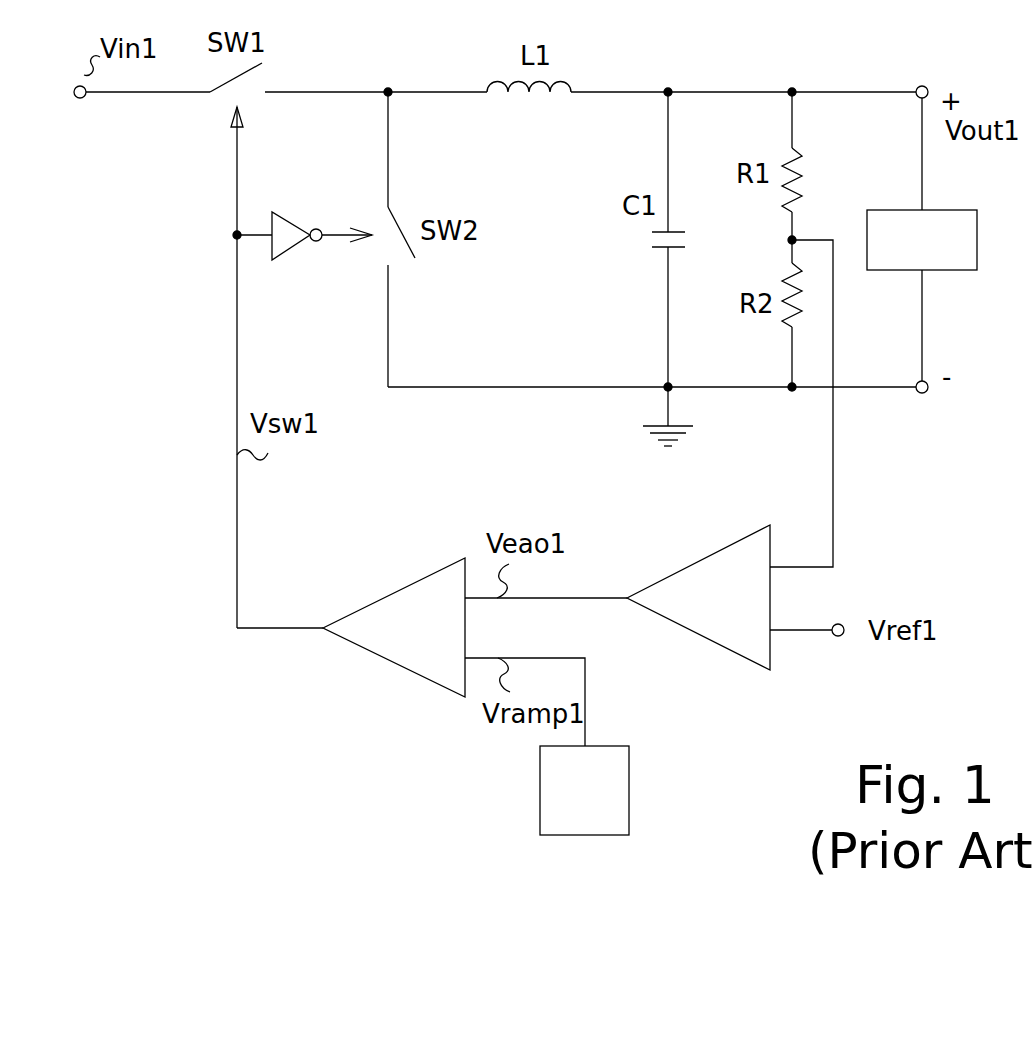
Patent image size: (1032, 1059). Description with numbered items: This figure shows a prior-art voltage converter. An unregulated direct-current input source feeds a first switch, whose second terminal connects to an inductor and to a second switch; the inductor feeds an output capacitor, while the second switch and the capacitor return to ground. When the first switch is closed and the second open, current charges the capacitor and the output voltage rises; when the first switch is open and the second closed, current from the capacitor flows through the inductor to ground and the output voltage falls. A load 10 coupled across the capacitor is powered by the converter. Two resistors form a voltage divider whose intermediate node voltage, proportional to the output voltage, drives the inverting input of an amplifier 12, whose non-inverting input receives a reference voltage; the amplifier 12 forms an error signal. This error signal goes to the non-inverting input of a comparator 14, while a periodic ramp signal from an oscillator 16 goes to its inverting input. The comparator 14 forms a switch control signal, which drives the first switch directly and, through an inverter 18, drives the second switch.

The load 10 is at (957, 270).
The amplifier 12 is at (677, 573).
The comparator 14 is at (374, 600).
The oscillator 16 is at (629, 755).
The inverter 18 is at (295, 250).